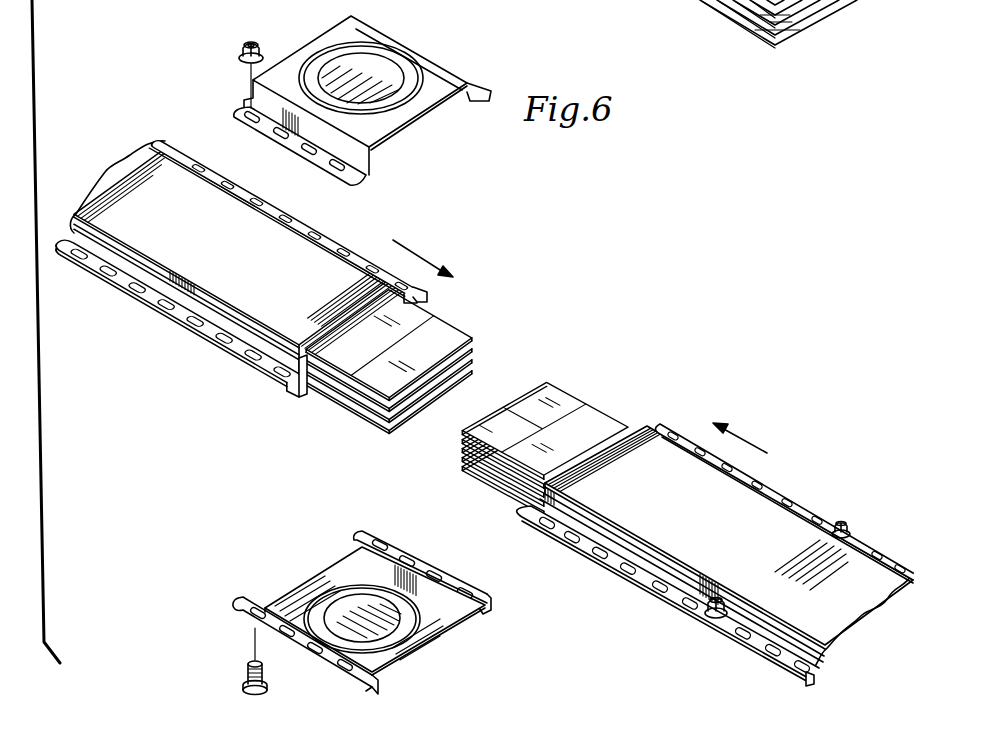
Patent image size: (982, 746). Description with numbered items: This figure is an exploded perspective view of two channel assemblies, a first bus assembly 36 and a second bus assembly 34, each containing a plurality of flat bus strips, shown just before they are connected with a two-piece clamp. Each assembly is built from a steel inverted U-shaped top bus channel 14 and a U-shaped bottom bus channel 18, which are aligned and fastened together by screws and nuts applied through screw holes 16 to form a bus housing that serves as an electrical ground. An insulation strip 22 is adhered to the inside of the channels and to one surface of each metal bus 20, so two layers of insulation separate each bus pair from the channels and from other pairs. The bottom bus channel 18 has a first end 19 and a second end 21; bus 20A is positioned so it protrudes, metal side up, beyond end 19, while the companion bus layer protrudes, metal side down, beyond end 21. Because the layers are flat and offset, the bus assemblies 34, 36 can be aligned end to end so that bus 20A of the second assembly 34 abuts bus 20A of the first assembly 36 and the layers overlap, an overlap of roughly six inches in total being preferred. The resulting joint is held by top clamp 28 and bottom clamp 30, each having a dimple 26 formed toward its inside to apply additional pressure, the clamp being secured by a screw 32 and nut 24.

The top bus channel 14 is at (293, 250).
The screw holes 16 is at (765, 667).
The bottom bus channel 18 is at (304, 388).
The end of bottom bus channel 19 is at (655, 426).
The metal bus 20 is at (477, 382).
The bus 20A is at (517, 408).
The end of bottom bus channel 21 is at (428, 288).
The insulation strip 22 is at (374, 398).
The nut 24 is at (252, 42).
The dimple 26 is at (388, 62).
The top clamp 28 is at (465, 78).
The bottom clamp 30 is at (324, 573).
The screw 32 is at (263, 671).
The second bus assembly 34 is at (773, 476).
The first bus assembly 36 is at (178, 330).